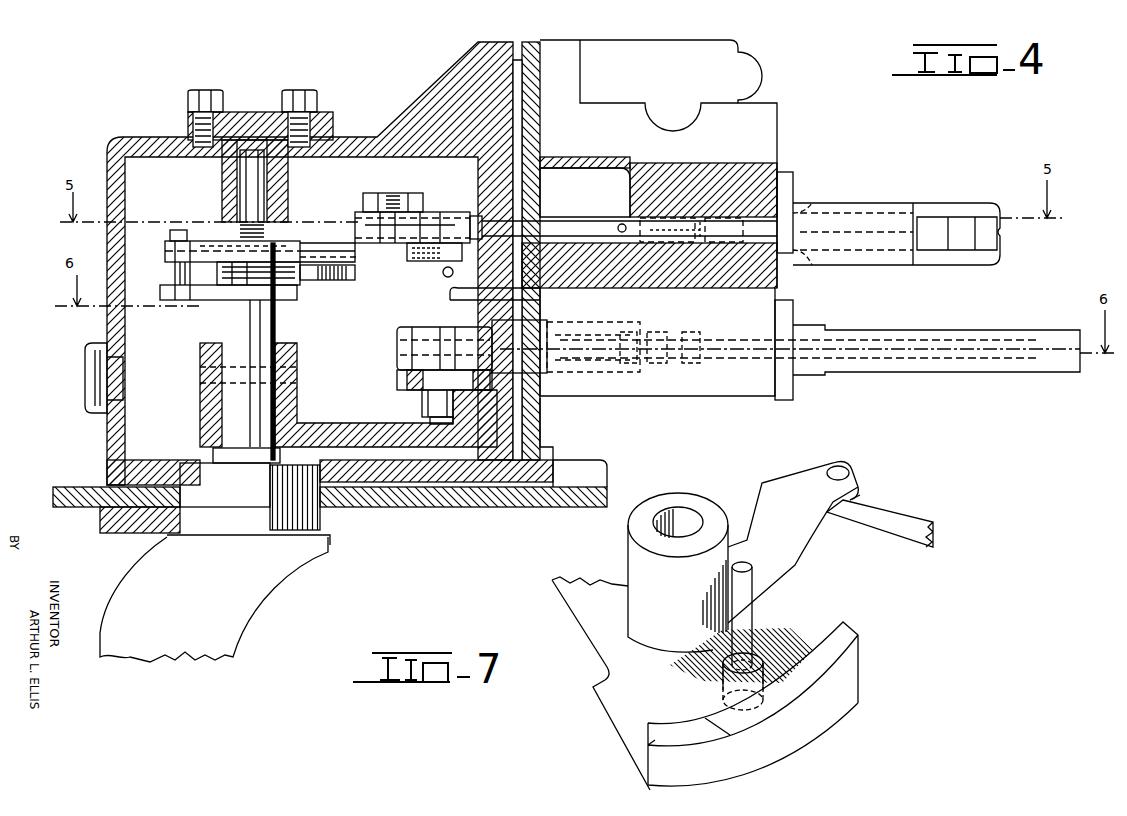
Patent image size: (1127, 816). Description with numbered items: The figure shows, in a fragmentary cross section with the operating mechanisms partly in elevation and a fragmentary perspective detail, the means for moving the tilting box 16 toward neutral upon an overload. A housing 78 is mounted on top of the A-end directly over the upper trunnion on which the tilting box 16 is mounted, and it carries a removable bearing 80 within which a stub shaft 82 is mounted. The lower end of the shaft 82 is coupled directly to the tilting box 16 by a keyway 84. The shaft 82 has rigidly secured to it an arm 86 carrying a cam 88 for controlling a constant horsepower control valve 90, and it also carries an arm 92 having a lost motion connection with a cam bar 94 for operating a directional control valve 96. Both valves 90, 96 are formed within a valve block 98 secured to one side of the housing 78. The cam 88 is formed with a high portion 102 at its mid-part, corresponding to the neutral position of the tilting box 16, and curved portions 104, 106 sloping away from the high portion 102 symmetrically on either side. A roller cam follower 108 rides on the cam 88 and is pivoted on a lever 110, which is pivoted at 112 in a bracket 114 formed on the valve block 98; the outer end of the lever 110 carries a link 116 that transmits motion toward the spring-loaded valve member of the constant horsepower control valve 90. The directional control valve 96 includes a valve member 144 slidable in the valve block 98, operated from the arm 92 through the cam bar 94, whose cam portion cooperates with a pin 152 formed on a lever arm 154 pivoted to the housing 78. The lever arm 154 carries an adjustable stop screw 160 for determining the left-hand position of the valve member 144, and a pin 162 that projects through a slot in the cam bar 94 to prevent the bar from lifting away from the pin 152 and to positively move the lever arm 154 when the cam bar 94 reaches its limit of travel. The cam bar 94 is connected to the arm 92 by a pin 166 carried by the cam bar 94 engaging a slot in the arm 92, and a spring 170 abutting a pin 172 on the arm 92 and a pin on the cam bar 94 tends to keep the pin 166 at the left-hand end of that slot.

In FIG. 4, the tilting box 16 is at (215, 584).
In FIG. 4, the housing 78 is at (125, 140).
In FIG. 4, the removable bearing 80 is at (242, 127).
In FIG. 4, the stub shaft 82 is at (258, 332).
In FIG. 4, the keyway 84 is at (253, 473).
In FIG. 4, the arm 86 is at (287, 397).
In FIG. 7, the arm 86 is at (642, 671).
In FIG. 4, the cam 88 is at (422, 402).
In FIG. 7, the cam 88 is at (743, 712).
In FIG. 4, the constant horsepower control valve 90 is at (712, 423).
In FIG. 4, the arm 92 is at (172, 283).
In FIG. 4, the cam bar 94 is at (316, 243).
In FIG. 4, the directional control valve 96 is at (840, 182).
In FIG. 4, the valve block 98 is at (758, 143).
In FIG. 7, the high portion 102 is at (752, 680).
In FIG. 7, the curved portion 104 is at (823, 648).
In FIG. 7, the curved portion 106 is at (708, 718).
In FIG. 4, the roller cam follower 108 is at (440, 412).
In FIG. 7, the roller cam follower 108 is at (773, 634).
In FIG. 4, the lever 110 is at (405, 358).
In FIG. 7, the lever 110 is at (813, 545).
In FIG. 4, the pivot 112 is at (412, 382).
In FIG. 7, the pivot 112 is at (693, 512).
In FIG. 4, the bracket 114 is at (503, 288).
In FIG. 4, the link 116 is at (483, 348).
In FIG. 7, the link 116 is at (870, 492).
In FIG. 4, the valve member 144 is at (697, 220).
In FIG. 4, the pin 152 is at (450, 246).
In FIG. 4, the lever arm 154 is at (433, 214).
In FIG. 4, the adjustable stop screw 160 is at (325, 275).
In FIG. 4, the pin 162 is at (391, 193).
In FIG. 4, the pin 166 is at (190, 277).
In FIG. 4, the spring 170 is at (278, 278).
In FIG. 4, the pin 172 is at (250, 275).